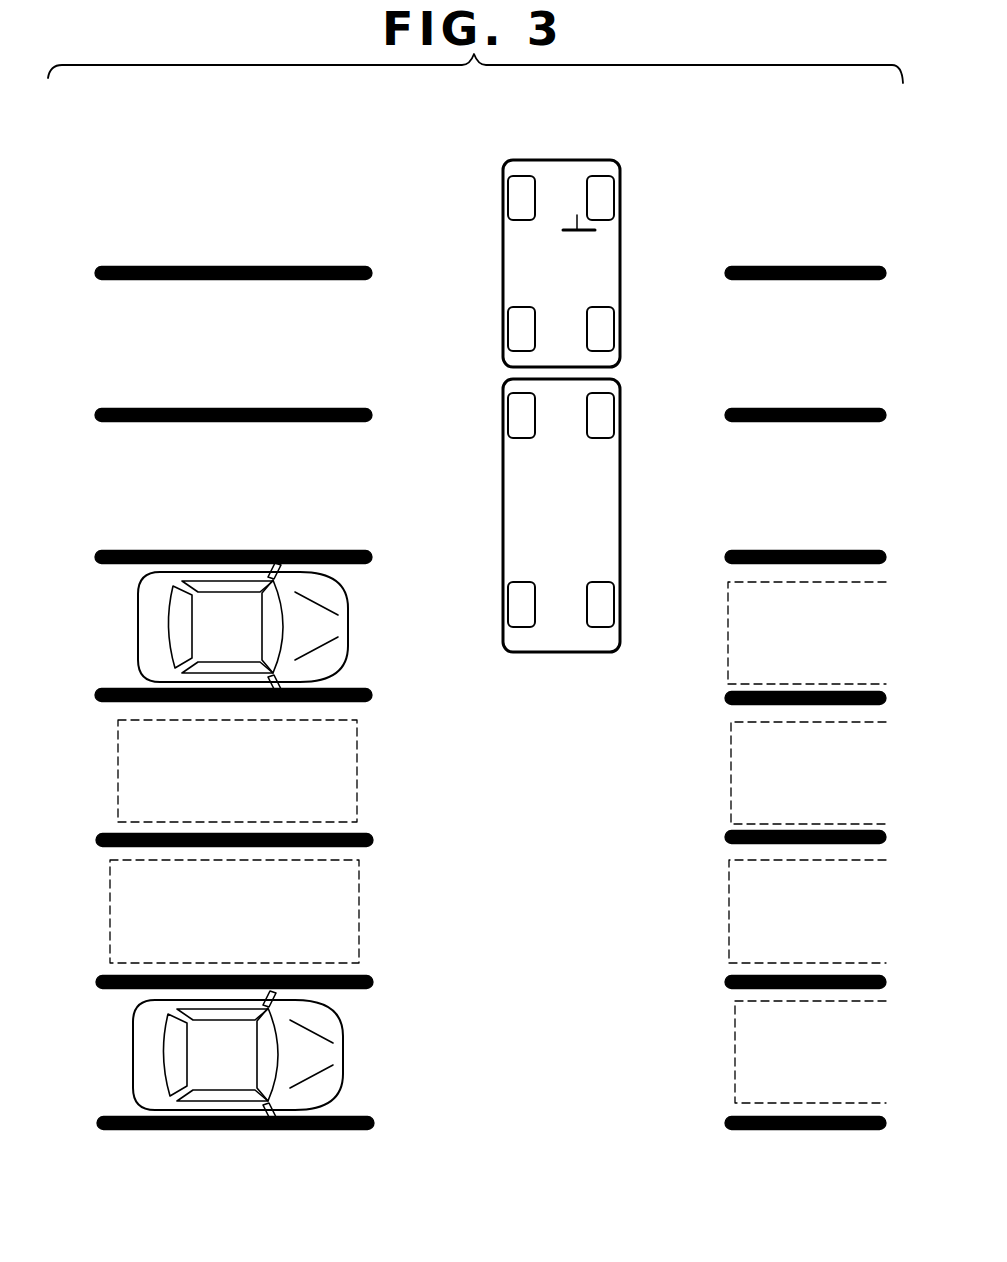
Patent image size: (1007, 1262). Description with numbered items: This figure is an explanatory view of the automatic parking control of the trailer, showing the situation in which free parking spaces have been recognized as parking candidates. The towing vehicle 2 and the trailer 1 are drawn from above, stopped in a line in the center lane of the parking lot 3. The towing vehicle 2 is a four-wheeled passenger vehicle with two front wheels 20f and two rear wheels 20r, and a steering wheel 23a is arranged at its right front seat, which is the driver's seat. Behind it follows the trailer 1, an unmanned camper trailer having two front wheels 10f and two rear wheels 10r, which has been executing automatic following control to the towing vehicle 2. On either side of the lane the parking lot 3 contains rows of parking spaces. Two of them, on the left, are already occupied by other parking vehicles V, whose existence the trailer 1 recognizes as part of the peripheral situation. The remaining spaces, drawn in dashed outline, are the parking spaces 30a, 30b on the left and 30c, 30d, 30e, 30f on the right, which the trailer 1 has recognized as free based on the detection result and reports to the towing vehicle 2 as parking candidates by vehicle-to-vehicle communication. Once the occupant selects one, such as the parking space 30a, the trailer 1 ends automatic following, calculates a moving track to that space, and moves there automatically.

The parking lot 3 is at (762, 210).
The trailer 1 is at (620, 505).
The towing vehicle 2 is at (620, 271).
The front wheels 10f is at (620, 408).
The rear wheels 10r is at (503, 613).
The front wheels 20f is at (503, 200).
The rear wheels 20r is at (503, 327).
The steering wheel 23a is at (595, 230).
The parking space 30a is at (357, 795).
The parking space 30b is at (359, 912).
The parking space 30c is at (728, 655).
The parking space 30d is at (731, 788).
The parking space 30e is at (729, 905).
The parking space 30f is at (735, 1046).
The other parking vehicles V is at (216, 572).